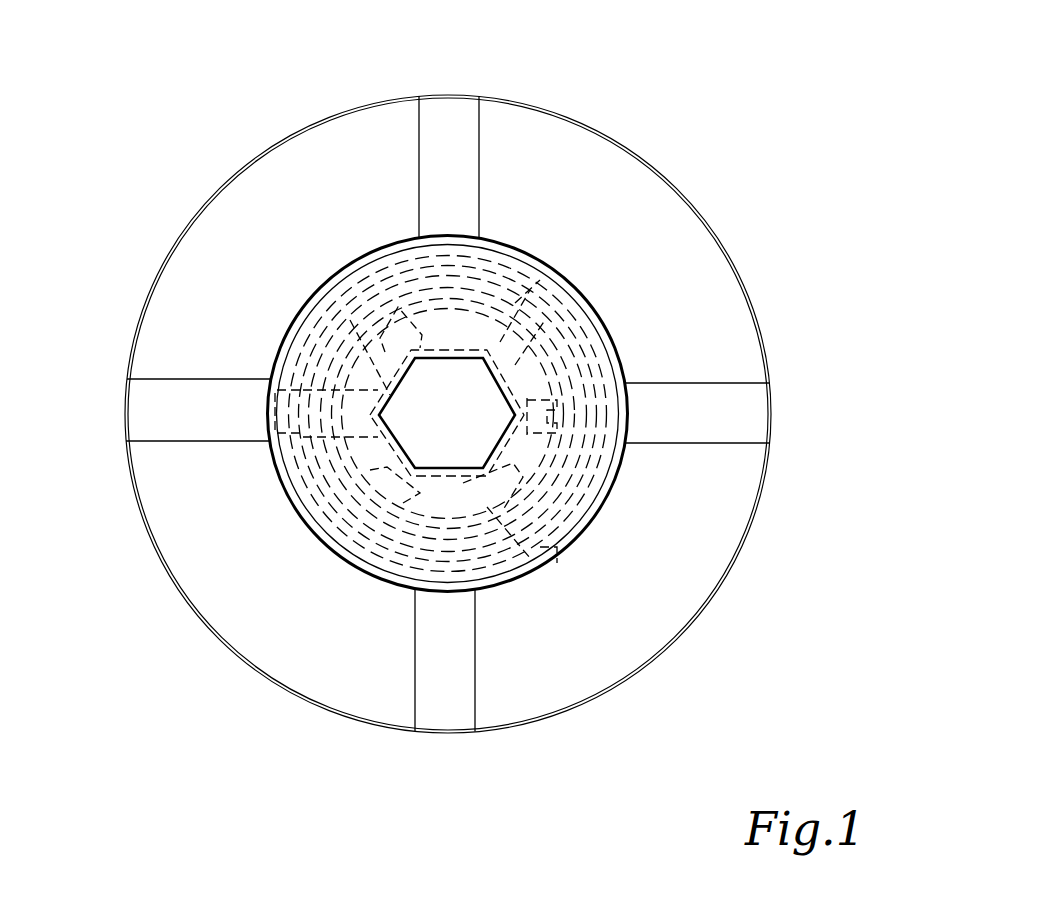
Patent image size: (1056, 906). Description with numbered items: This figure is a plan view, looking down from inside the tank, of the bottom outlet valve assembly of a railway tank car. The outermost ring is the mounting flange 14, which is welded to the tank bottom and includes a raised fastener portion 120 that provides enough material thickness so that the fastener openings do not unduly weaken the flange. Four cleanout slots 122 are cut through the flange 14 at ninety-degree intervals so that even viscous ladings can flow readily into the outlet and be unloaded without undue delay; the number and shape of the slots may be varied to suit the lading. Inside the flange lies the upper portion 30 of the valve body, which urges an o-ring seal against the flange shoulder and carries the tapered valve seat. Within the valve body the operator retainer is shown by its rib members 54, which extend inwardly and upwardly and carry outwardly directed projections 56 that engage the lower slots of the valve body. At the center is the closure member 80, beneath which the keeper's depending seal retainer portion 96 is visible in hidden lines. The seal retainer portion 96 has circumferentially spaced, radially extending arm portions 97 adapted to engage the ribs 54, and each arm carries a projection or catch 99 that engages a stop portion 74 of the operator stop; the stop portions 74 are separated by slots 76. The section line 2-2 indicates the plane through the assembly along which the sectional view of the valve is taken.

The section line 2- 2 is at (257, 357).
The mounting flange 14 is at (645, 155).
The upper portion of valve body 30 is at (582, 288).
The rib members 54 is at (350, 403).
The outwardly directed projections 56 is at (552, 562).
The stop portions 74 is at (377, 470).
The slots 76 is at (380, 417).
The closure member 80 is at (483, 428).
The seal retainer portion 96 is at (583, 358).
The arm portions 97 is at (388, 327).
The projections or catches 99 is at (406, 343).
The fastener portion 120 is at (288, 643).
The slots 122 is at (753, 405).